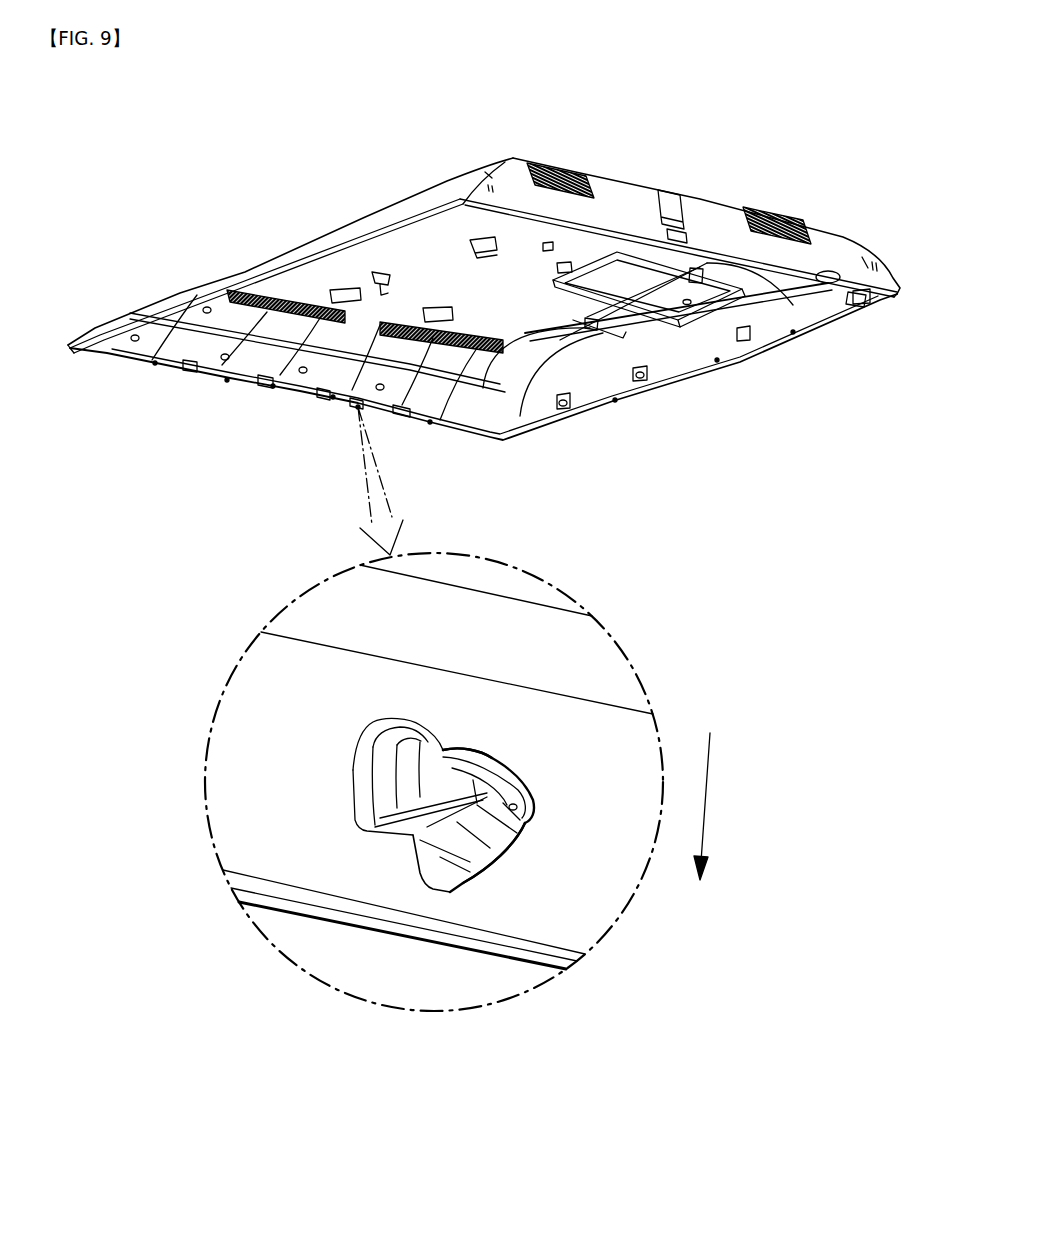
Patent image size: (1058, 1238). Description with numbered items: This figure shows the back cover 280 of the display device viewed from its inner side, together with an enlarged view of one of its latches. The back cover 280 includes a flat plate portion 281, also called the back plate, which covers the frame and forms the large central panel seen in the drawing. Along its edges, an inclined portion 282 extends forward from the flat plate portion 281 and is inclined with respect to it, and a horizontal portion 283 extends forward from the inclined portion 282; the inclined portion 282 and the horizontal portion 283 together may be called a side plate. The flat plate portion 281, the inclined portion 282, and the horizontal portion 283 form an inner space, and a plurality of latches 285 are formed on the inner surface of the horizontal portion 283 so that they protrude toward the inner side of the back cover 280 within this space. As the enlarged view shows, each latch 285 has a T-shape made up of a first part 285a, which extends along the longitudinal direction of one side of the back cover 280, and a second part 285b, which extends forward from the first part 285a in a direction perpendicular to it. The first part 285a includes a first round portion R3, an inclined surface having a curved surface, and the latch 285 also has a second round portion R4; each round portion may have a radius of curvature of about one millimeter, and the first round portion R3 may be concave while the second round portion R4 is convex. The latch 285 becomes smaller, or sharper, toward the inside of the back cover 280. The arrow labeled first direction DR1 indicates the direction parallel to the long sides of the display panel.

The back cover 280 is at (201, 131).
The flat plate portion 281 is at (447, 258).
The inclined portion 282 is at (240, 270).
The horizontal portion 283 is at (137, 320).
The latch 285 is at (158, 363).
The first part 285a is at (402, 787).
The second part 285b is at (447, 840).
The first round portion R3 is at (446, 747).
The second round portion R4 is at (508, 857).
The first direction DR1 is at (725, 806).